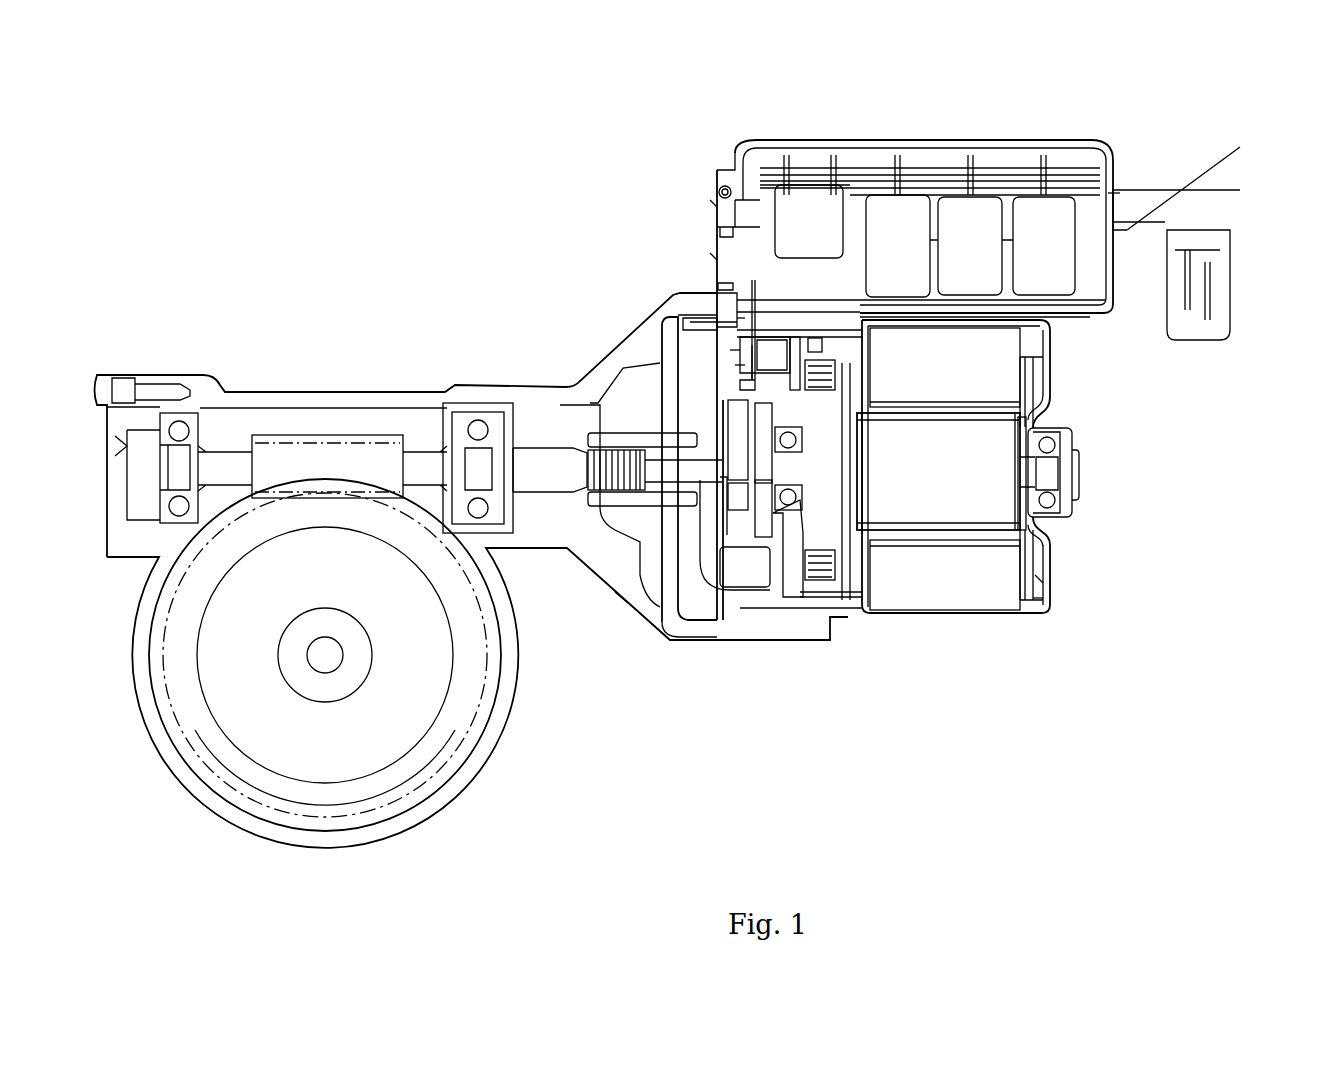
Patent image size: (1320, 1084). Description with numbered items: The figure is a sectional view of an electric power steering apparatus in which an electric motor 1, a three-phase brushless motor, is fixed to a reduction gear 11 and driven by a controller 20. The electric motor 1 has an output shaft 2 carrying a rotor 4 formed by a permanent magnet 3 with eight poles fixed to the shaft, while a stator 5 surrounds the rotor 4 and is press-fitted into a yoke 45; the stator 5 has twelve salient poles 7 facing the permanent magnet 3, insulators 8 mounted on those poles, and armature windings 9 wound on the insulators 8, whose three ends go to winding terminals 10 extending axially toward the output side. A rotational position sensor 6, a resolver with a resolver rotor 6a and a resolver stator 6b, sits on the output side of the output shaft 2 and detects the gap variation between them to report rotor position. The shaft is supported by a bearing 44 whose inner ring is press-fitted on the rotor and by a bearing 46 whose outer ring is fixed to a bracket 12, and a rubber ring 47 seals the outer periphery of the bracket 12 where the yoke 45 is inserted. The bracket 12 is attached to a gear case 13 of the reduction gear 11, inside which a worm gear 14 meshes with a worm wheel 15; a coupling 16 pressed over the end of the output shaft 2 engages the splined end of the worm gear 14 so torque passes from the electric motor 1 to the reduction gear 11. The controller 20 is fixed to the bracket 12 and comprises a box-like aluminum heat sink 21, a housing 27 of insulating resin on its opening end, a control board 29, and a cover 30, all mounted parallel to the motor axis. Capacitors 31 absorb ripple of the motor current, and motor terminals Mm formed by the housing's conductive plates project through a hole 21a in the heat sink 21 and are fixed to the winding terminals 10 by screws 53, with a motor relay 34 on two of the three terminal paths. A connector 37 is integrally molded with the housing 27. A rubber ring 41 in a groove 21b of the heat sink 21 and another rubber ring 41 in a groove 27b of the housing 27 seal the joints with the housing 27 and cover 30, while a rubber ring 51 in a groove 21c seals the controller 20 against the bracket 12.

The electric motor 1 is at (968, 513).
The output shaft 2 is at (690, 560).
The permanent magnet 3 is at (933, 530).
The rotor 4 is at (987, 603).
The stator 5 is at (997, 553).
The rotational position sensor 6 is at (735, 545).
The resolver rotor 6a is at (710, 540).
The resolver stator 6b is at (765, 560).
The salient poles 7 is at (1030, 577).
The insulators 8 is at (1038, 598).
The armature windings 9 is at (1043, 583).
The winding terminals 10 is at (740, 365).
The reduction gear 11 is at (388, 390).
The bracket 12 is at (770, 612).
The gear case 13 is at (620, 597).
The worm gear 14 is at (288, 450).
The worm wheel 15 is at (430, 760).
The coupling 16 is at (600, 522).
The controller 20 is at (1050, 140).
The heat sink 21 is at (1047, 272).
The hole 21a is at (715, 258).
The groove 21b is at (1120, 228).
The groove 21c is at (717, 290).
The housing 27 is at (713, 217).
The groove 27b is at (717, 207).
The control board 29 is at (870, 175).
The cover 30 is at (945, 135).
The capacitors 31 is at (1000, 305).
The motor relay 34 is at (812, 213).
The connector 37 is at (1235, 272).
The rubber ring 41 is at (1112, 195).
The bearing 44 is at (1050, 507).
The yoke 45 is at (1053, 570).
The bearing 46 is at (800, 582).
The rubber ring 47 is at (845, 598).
The rubber ring 51 is at (740, 318).
The screws 53 is at (735, 350).
The motor terminals Mm is at (752, 345).